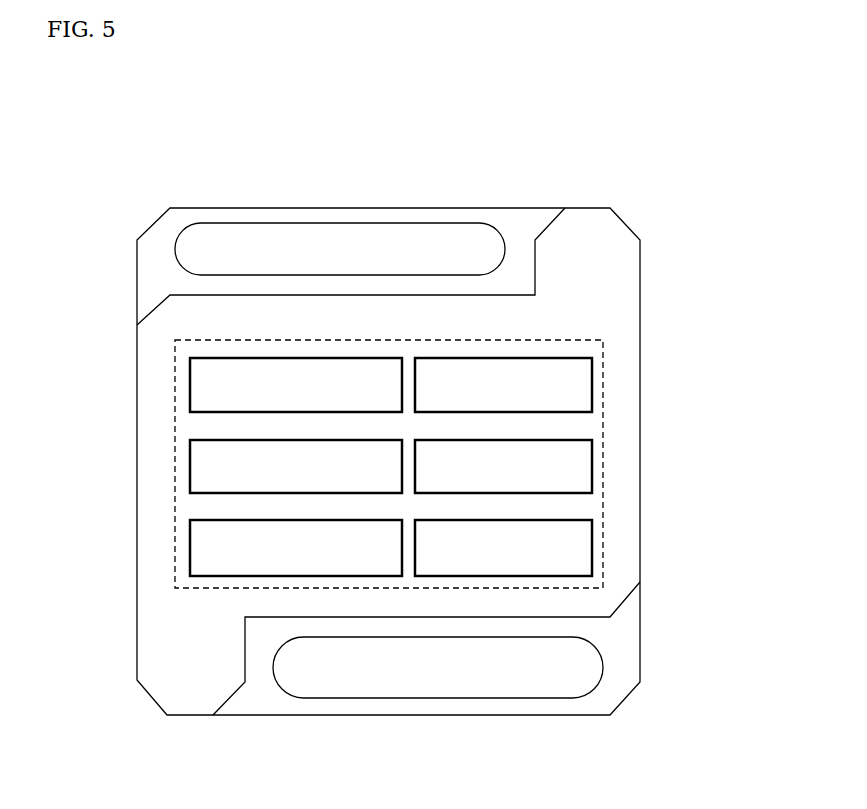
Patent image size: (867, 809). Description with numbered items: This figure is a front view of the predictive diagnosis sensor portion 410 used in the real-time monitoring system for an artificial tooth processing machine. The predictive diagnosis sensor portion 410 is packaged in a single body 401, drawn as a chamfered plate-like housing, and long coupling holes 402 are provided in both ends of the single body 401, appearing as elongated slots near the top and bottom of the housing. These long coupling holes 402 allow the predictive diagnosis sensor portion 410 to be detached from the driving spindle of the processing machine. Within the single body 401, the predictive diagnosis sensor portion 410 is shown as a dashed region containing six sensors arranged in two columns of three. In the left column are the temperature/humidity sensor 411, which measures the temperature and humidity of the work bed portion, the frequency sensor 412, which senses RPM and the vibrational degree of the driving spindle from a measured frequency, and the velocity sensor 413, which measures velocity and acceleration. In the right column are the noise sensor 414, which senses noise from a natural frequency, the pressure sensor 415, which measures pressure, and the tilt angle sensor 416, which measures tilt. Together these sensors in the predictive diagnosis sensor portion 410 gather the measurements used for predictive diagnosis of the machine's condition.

The single body 401 is at (640, 318).
The long coupling holes 402 is at (360, 223).
The predictive diagnosis sensor portion 410 is at (567, 340).
The temperature/humidity sensor 411 is at (190, 384).
The frequency sensor 412 is at (190, 468).
The velocity sensor 413 is at (190, 550).
The noise sensor 414 is at (592, 383).
The pressure sensor 415 is at (592, 466).
The tilt angle sensor 416 is at (592, 548).